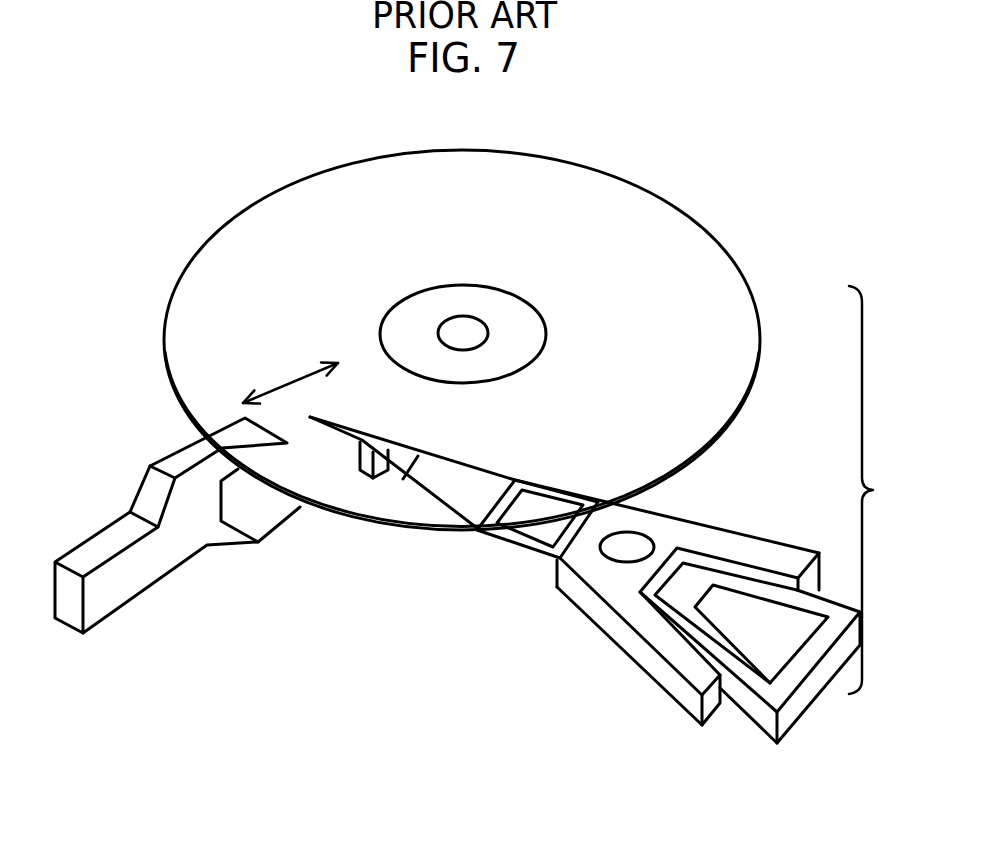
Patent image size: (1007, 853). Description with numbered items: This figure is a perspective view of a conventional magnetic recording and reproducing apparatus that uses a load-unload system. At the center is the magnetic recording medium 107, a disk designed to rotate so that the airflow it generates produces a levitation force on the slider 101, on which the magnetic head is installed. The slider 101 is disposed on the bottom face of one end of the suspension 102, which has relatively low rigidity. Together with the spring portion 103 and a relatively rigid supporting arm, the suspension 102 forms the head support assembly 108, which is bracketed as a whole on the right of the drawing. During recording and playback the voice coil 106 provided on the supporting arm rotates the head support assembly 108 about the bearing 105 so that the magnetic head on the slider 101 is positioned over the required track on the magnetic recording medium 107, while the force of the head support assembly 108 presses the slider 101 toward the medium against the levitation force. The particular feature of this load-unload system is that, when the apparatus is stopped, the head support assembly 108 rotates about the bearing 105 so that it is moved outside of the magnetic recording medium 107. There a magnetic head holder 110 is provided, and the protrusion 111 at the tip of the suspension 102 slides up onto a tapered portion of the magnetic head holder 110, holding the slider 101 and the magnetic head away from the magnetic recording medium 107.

The slider 101 is at (367, 467).
The suspension 102 is at (448, 472).
The spring portion 103 is at (553, 497).
The bearing 105 is at (627, 547).
The voice coil 106 is at (802, 613).
The magnetic recording medium 107 is at (618, 240).
The head support assembly 108 is at (918, 505).
The magnetic head holder 110 is at (237, 440).
The protrusion 111 is at (350, 440).